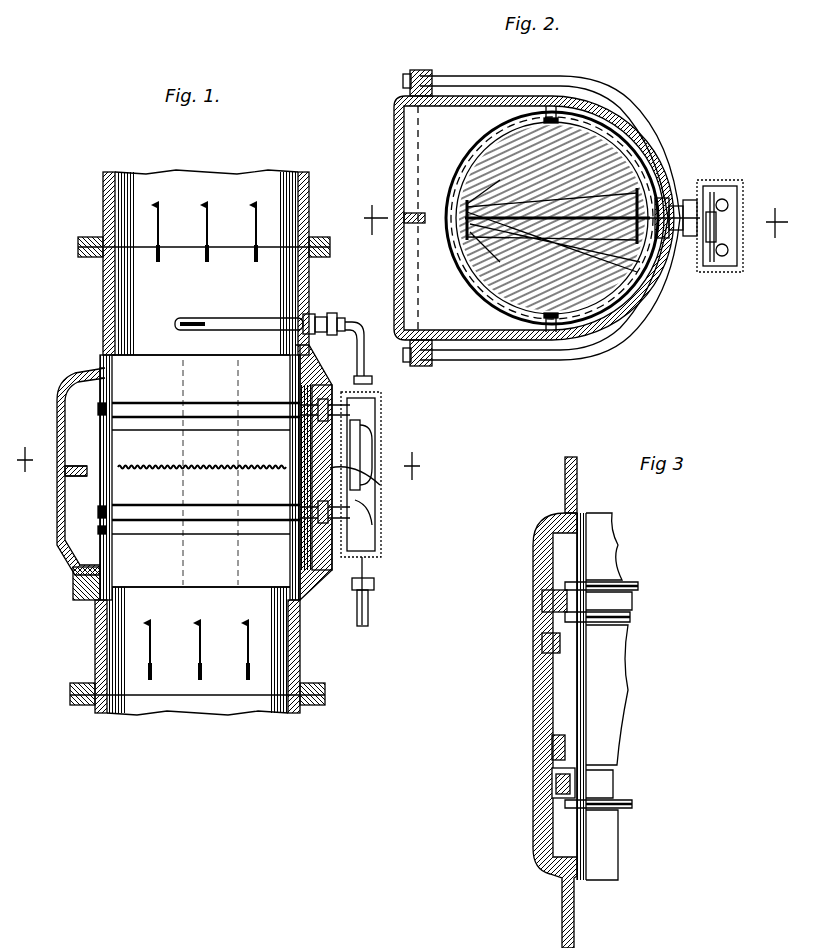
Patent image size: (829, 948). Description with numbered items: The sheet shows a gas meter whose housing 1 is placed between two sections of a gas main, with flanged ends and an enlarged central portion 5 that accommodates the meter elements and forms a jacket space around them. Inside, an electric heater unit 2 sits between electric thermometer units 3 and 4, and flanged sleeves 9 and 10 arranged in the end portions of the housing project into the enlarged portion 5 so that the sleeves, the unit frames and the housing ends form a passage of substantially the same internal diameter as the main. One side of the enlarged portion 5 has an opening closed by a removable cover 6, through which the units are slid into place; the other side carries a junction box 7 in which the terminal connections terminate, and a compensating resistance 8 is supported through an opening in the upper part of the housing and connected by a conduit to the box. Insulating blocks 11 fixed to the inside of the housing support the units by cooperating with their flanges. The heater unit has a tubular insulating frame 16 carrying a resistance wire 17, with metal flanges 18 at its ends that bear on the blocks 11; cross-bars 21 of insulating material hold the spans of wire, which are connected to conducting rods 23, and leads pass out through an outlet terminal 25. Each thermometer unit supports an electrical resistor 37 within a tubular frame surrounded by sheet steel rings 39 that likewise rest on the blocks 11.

In FIG. 1, the housing 1 is at (101, 286).
In FIG. 2, the housing 1 is at (570, 221).
In FIG. 1, the electric heater unit 2 is at (219, 461).
In FIG. 3, the electric heater unit 2 is at (618, 695).
In FIG. 1, the electric thermometer unit 3 is at (260, 530).
In FIG. 3, the electric thermometer unit 3 is at (614, 782).
In FIG. 1, the electric thermometer unit 4 is at (244, 416).
In FIG. 3, the electric thermometer unit 4 is at (632, 603).
In FIG. 1, the enlarged central portion 5 is at (90, 493).
In FIG. 2, the enlarged central portion 5 is at (603, 104).
In FIG. 3, the enlarged central portion 5 is at (540, 690).
In FIG. 1, the removable cover 6 is at (63, 384).
In FIG. 2, the removable cover 6 is at (400, 134).
In FIG. 1, the junction box 7 is at (382, 410).
In FIG. 2, the junction box 7 is at (745, 202).
In FIG. 1, the compensating resistance 8 is at (250, 322).
In FIG. 1, the flanged sleeve 9 is at (395, 448).
In FIG. 3, the flanged sleeve 9 is at (616, 837).
In FIG. 1, the flanged sleeve 10 is at (201, 372).
In FIG. 3, the flanged sleeve 10 is at (616, 537).
In FIG. 2, the insulating blocks 11 is at (568, 102).
In FIG. 3, the insulating blocks 11 is at (553, 606).
In FIG. 1, the tubular frame 16 is at (100, 490).
In FIG. 1, the resistance wire 17 is at (224, 470).
In FIG. 2, the resistance wire 17 is at (600, 150).
In FIG. 1, the metal flanges 18 is at (100, 430).
In FIG. 2, the metal flanges 18 is at (656, 297).
In FIG. 3, the metal flanges 18 is at (628, 634).
In FIG. 2, the cross-bars 21 is at (632, 312).
In FIG. 2, the conducting rods 23 is at (637, 196).
In FIG. 1, the outlet terminal 25 is at (330, 470).
In FIG. 1, the electrical resistor 37 is at (202, 415).
In FIG. 1, the sheet steel rings 39 is at (320, 386).
In FIG. 3, the sheet steel rings 39 is at (638, 588).